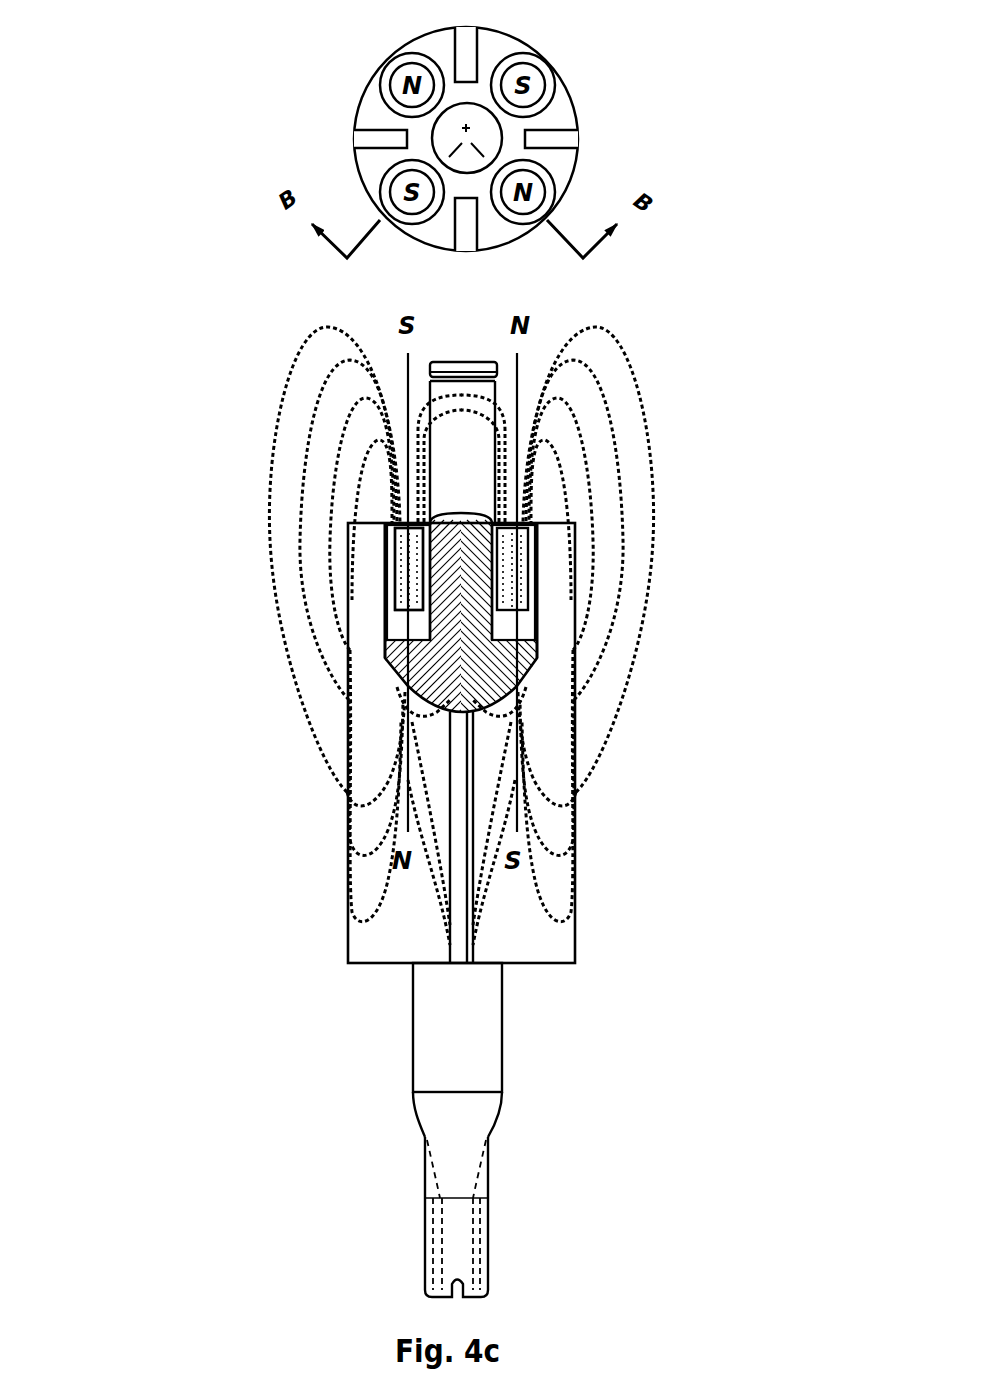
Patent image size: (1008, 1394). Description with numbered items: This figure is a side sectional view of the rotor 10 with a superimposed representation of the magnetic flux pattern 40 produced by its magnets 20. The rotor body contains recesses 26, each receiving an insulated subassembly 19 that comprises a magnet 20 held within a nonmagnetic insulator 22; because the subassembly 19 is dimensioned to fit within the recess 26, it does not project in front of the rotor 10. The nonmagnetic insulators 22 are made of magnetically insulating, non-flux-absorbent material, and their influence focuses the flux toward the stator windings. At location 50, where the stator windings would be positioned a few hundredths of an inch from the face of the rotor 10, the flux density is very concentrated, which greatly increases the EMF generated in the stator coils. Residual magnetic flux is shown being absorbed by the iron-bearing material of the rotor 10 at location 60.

The rotor 10 is at (372, 745).
The insulated subassembly 19 is at (378, 600).
The magnet 20 is at (400, 580).
The nonmagnetic insulator 22 is at (390, 611).
The recess 26 is at (523, 525).
The flux pattern 40 is at (667, 553).
The location of concentrated flux density 50 is at (500, 516).
The location of residual flux absorption 60 is at (348, 865).